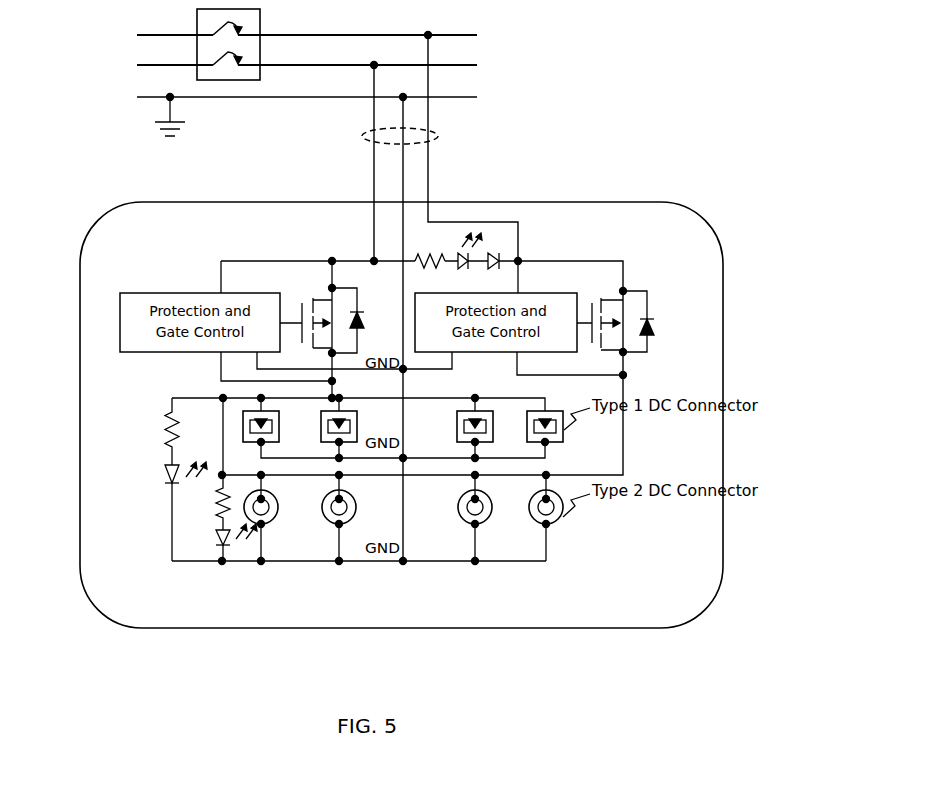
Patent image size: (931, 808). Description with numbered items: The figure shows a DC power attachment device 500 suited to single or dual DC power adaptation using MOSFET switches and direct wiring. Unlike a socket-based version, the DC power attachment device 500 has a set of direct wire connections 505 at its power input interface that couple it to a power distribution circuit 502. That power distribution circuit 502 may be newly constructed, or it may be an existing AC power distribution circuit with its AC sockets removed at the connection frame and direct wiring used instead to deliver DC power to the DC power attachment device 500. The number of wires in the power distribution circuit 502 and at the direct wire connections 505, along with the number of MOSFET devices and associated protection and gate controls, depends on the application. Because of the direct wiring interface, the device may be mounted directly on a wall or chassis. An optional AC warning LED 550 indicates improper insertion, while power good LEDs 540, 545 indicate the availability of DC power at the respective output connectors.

The DC power attachment device 500 is at (724, 163).
The power distribution circuit 502 is at (497, 32).
The direct wire connections 505 is at (361, 131).
The power good LED 540 is at (109, 479).
The power good LED 545 is at (154, 479).
The AC warning LED 550 is at (482, 233).